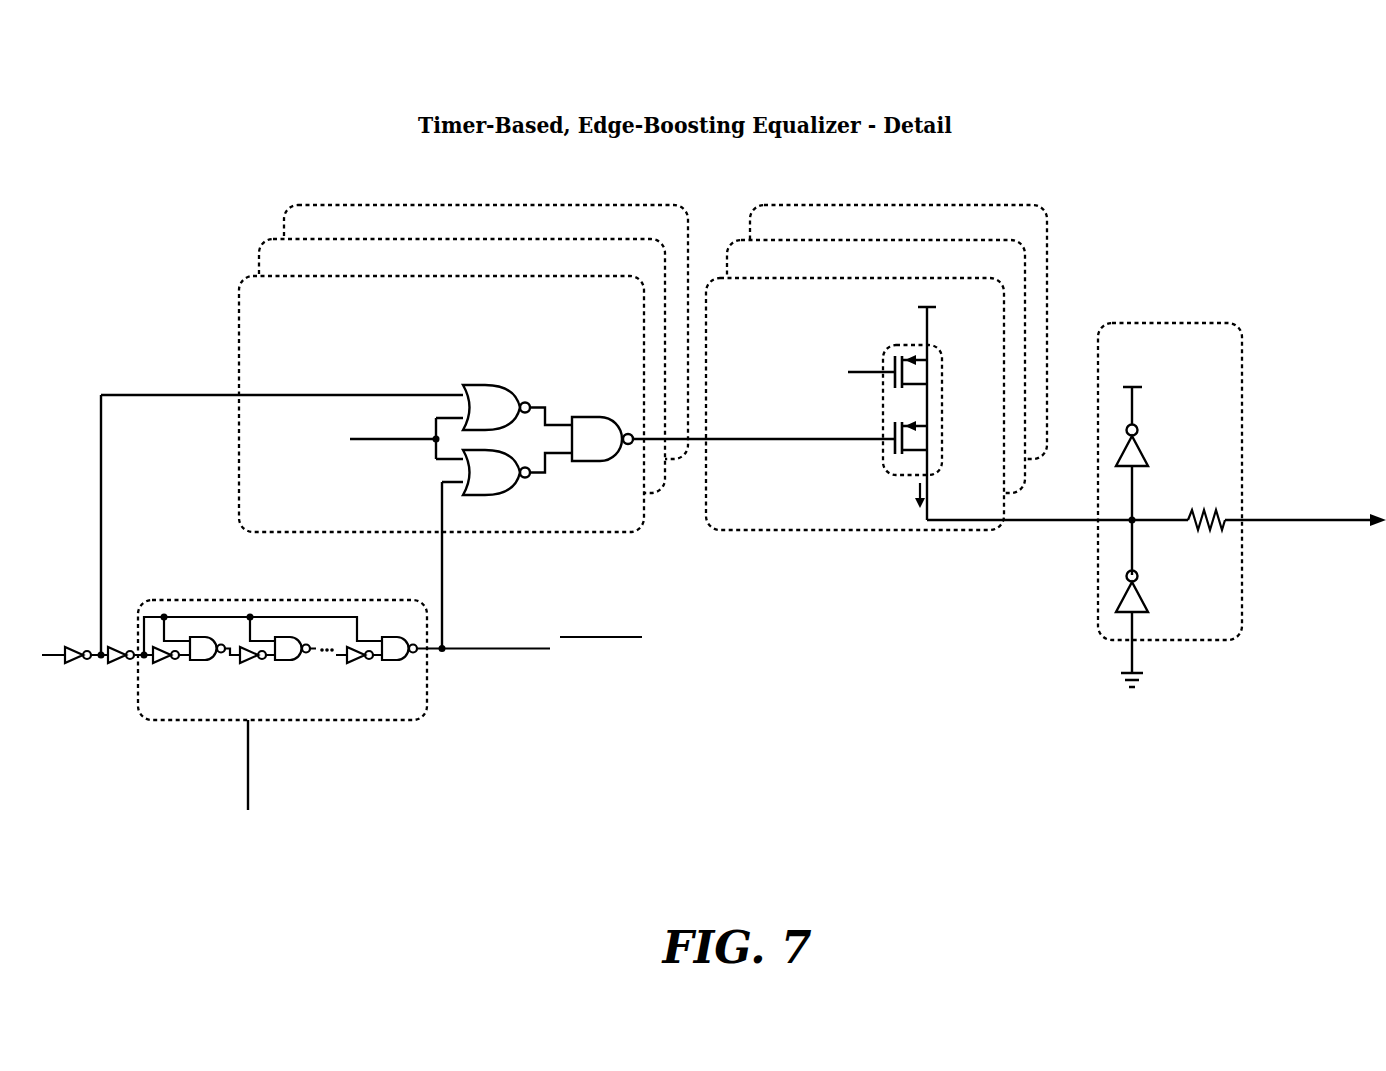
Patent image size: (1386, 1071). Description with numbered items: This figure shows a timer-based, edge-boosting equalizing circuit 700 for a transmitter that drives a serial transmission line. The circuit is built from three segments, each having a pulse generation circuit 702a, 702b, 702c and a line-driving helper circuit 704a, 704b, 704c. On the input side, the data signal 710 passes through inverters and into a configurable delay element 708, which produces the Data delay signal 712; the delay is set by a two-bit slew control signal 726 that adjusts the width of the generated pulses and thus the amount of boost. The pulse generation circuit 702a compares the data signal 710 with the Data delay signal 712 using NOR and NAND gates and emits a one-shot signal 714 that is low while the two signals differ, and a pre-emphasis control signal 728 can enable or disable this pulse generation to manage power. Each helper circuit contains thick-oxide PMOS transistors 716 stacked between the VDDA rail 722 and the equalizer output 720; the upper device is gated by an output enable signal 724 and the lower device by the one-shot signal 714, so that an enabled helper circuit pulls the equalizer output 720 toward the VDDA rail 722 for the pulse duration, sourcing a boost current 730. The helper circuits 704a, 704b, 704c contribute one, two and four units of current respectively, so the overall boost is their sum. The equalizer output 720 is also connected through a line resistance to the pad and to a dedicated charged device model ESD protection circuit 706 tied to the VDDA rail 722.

The timer-based, edge-boosting equalizing circuit 700 is at (103, 98).
The pulse generation circuit 702a is at (239, 293).
The pulse generation circuit 702b is at (259, 258).
The pulse generation circuit 702c is at (284, 224).
The helper circuit 704a is at (1004, 298).
The helper circuit 704b is at (1025, 262).
The helper circuit 704c is at (1047, 220).
The charged device model ESD protection circuit 706 is at (1243, 342).
The delay element 708 is at (334, 722).
The data signal 710 is at (53, 660).
The Data delay signal 712 is at (455, 590).
The one-shot signal 714 is at (777, 441).
The PMOS transistors 716 is at (884, 462).
The equalizer output 720 is at (1090, 521).
The VDDA rail 722 is at (926, 335).
The output enable signal 724 is at (864, 368).
The slew control signal 726 is at (247, 773).
The pre-emphasis control signal 728 is at (418, 438).
The current 730 is at (866, 510).